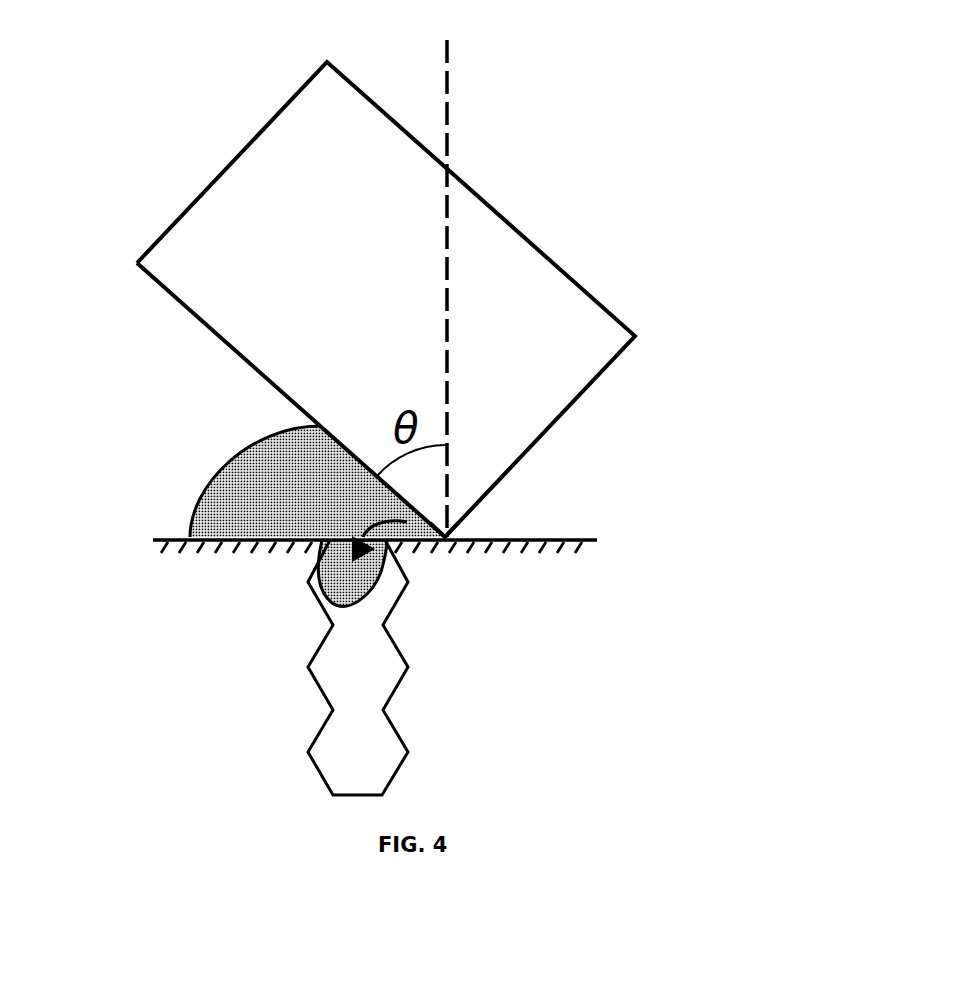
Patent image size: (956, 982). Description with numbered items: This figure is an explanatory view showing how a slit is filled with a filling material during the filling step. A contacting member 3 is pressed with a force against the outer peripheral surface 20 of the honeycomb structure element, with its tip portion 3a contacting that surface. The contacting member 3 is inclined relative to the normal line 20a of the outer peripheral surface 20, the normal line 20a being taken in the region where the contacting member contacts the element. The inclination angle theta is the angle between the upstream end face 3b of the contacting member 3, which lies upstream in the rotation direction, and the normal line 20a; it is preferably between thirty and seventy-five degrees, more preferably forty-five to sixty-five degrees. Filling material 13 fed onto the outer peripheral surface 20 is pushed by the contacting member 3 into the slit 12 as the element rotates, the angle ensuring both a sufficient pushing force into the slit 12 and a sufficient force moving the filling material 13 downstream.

The contacting member 3 is at (262, 128).
The tip portion of the contacting member 3a is at (446, 537).
The upstream end face of the contacting member 3b is at (250, 372).
The slit 12 is at (316, 648).
The filling material 13 is at (200, 487).
The outer peripheral surface 20 is at (548, 537).
The normal line 20a is at (453, 97).